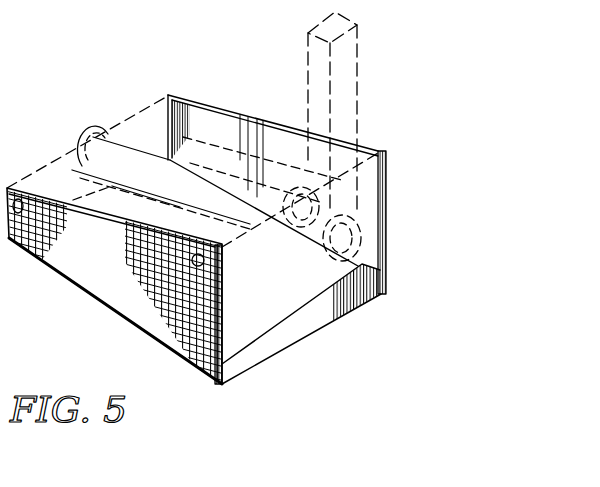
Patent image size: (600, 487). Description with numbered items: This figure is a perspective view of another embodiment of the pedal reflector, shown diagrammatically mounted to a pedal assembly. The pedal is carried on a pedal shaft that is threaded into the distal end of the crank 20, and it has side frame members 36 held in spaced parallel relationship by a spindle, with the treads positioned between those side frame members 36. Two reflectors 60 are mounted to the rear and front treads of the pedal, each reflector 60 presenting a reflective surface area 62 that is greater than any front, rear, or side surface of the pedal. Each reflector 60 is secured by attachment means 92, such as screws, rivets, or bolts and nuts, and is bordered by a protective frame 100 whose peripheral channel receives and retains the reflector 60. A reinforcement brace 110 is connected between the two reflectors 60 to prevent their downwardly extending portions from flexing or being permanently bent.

The crank 20 is at (364, 42).
The side frame members 36 is at (72, 152).
The reflector 60 is at (247, 106).
The reflective surface area 62 is at (87, 262).
The attachment means 92 is at (20, 198).
The protective frame 100 is at (387, 237).
The reinforcement brace 110 is at (311, 323).